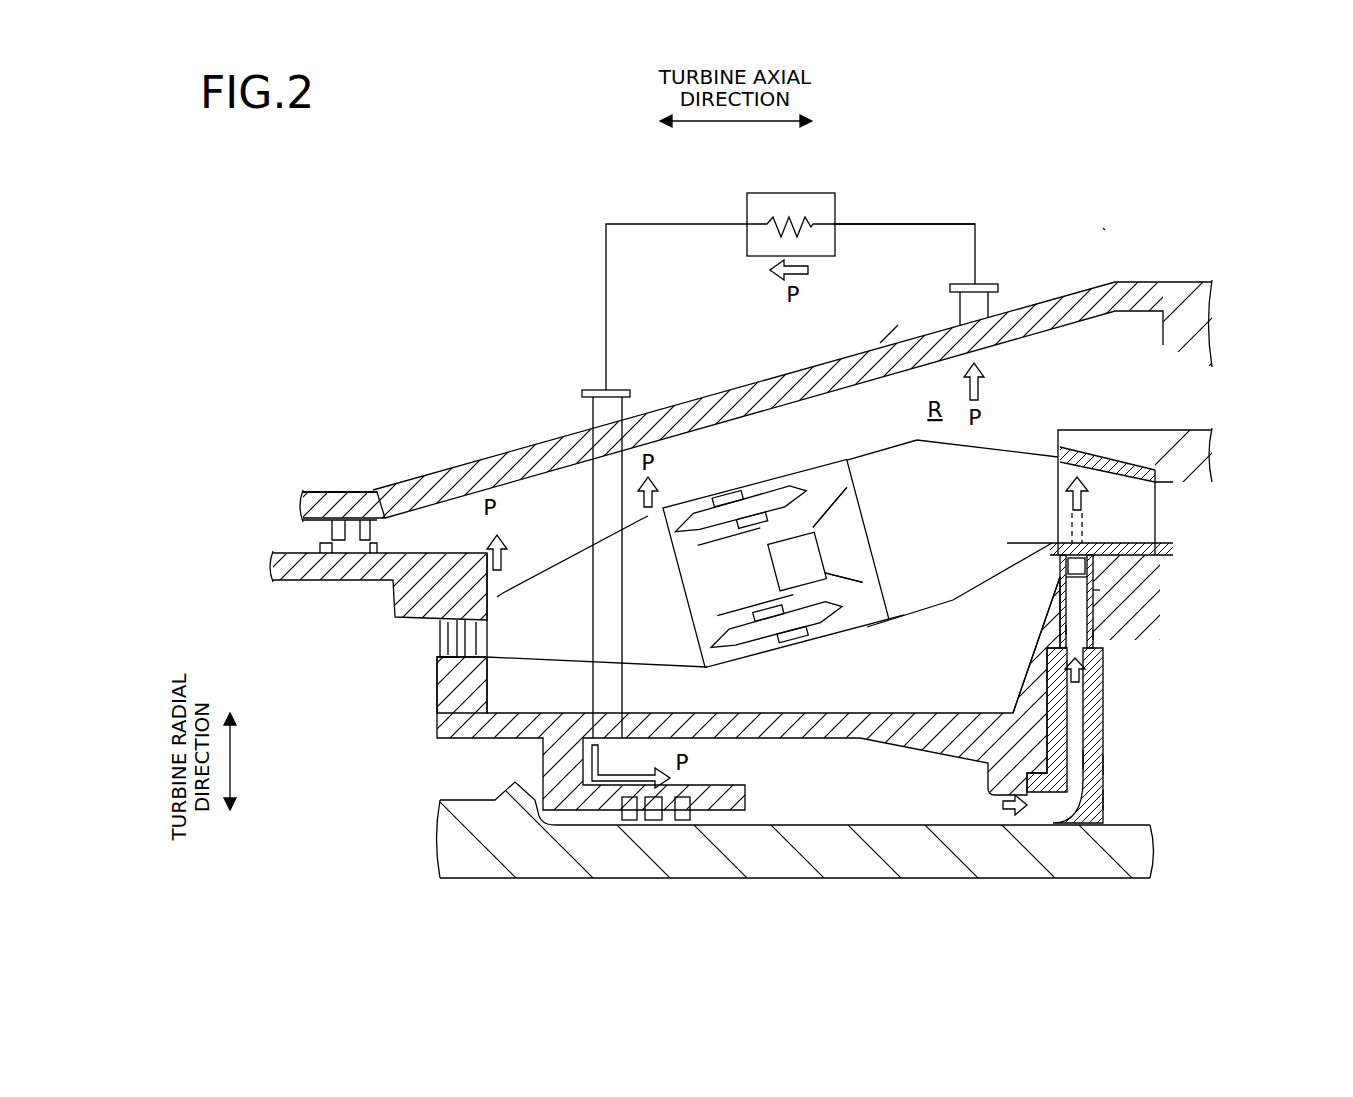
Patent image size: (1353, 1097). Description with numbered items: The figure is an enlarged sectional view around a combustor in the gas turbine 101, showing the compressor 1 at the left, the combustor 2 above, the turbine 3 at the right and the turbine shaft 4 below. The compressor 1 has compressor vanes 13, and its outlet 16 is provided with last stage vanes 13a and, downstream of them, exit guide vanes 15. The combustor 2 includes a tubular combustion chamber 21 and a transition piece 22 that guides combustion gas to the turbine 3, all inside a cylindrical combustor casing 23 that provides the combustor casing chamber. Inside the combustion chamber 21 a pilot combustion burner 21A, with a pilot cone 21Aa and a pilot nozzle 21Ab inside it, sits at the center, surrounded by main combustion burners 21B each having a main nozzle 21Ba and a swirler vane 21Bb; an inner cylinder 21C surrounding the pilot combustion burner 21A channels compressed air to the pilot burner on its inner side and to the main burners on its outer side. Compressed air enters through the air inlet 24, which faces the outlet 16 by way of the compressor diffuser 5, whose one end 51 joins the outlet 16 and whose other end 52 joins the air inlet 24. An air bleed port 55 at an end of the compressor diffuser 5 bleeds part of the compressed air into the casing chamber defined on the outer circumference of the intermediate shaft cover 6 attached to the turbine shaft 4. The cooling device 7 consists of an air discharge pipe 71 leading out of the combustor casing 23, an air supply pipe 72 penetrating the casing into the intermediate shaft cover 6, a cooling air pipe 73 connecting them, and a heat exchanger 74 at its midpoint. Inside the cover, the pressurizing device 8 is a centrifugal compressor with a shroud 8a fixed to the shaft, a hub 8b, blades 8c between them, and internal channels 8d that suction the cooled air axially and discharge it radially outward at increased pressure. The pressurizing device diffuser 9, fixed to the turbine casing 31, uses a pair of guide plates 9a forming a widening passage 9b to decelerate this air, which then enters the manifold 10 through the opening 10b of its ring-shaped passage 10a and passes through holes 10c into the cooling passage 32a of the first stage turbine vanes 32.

The compressor 1 is at (276, 492).
The combustor 2 is at (846, 357).
The turbine 3 is at (1243, 308).
The turbine shaft 4 is at (697, 868).
The compressor diffuser 5 is at (548, 565).
The intermediate shaft cover 6 is at (800, 712).
The cooling device 7 is at (676, 208).
The pressurizing device 8 is at (1108, 709).
The shroud 8a is at (1052, 681).
The hub 8b is at (1100, 767).
The blades 8c is at (1085, 760).
The internal channels 8d is at (1092, 800).
The pressurizing device diffuser 9 is at (1093, 607).
The guide plates 9a is at (1060, 606).
The passage 9b is at (1068, 630).
The manifold 10 is at (1095, 566).
The ring-shaped passage 10a is at (1062, 560).
The opening 10b is at (1067, 578).
The holes 10c is at (1098, 592).
The compressor vanes 13 is at (340, 436).
The last stage vanes 13a is at (455, 600).
The exit guide vanes 15 is at (470, 612).
The outlet 16 is at (487, 630).
The combustion chamber 21 is at (815, 468).
The pilot combustion burner 21A is at (848, 508).
The pilot cone 21Aa is at (835, 566).
The pilot nozzle 21Ab is at (873, 560).
The main combustion burners 21B is at (760, 488).
The main nozzle 21Ba is at (702, 482).
The swirler vane 21Bb is at (742, 492).
The inner cylinder 21C is at (812, 565).
The transition piece 22 is at (1010, 460).
The combustor casing 23 is at (893, 340).
The air inlet 24 is at (668, 580).
The turbine casing 31 is at (1070, 430).
The turbine vanes 32 is at (1057, 505).
The cooling passage 32a is at (1082, 528).
The one end 51 is at (488, 668).
The other end 52 is at (690, 668).
The air bleed port 55 is at (648, 455).
The air discharge pipe 71 is at (990, 300).
The air supply pipe 72 is at (590, 386).
The cooling air pipe 73 is at (913, 222).
The heat exchanger 74 is at (822, 193).
The gas turbine 101 is at (1103, 233).